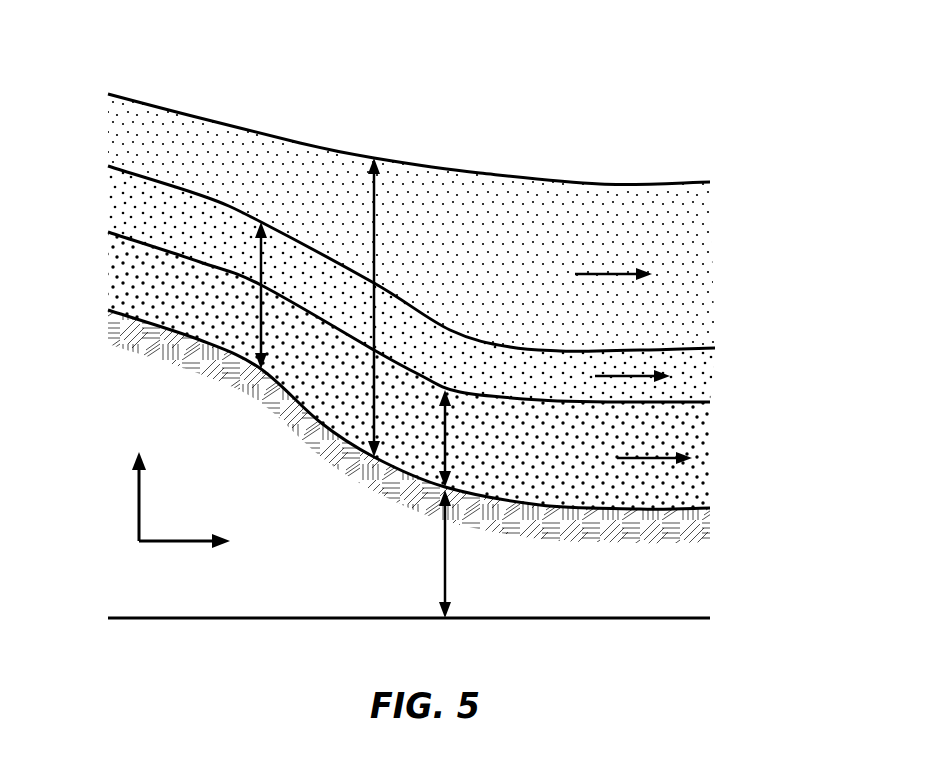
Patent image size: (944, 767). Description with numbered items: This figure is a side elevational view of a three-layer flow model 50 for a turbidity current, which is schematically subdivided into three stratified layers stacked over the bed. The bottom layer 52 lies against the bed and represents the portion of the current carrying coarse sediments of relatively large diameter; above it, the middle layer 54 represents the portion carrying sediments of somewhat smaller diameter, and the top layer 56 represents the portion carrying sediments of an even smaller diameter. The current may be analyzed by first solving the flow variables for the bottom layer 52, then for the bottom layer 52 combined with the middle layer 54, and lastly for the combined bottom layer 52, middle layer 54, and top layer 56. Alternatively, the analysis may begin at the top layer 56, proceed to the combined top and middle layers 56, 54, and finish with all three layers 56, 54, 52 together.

The water body / flow system 50 is at (112, 40).
The bottom layer 52 is at (110, 263).
The middle layer 54 is at (110, 196).
The top layer 56 is at (110, 130).